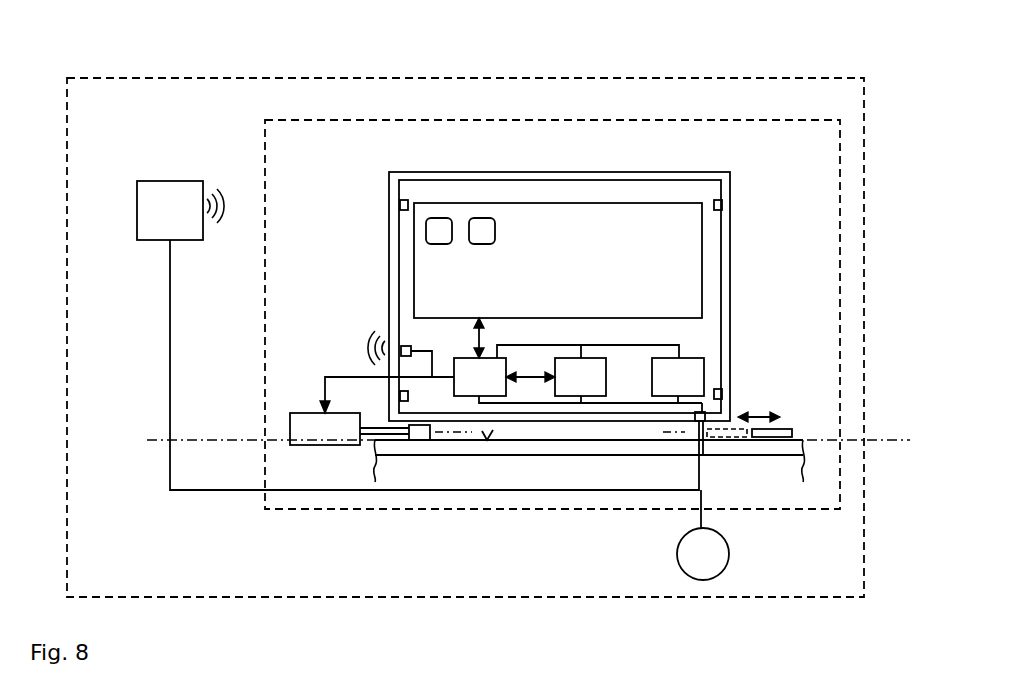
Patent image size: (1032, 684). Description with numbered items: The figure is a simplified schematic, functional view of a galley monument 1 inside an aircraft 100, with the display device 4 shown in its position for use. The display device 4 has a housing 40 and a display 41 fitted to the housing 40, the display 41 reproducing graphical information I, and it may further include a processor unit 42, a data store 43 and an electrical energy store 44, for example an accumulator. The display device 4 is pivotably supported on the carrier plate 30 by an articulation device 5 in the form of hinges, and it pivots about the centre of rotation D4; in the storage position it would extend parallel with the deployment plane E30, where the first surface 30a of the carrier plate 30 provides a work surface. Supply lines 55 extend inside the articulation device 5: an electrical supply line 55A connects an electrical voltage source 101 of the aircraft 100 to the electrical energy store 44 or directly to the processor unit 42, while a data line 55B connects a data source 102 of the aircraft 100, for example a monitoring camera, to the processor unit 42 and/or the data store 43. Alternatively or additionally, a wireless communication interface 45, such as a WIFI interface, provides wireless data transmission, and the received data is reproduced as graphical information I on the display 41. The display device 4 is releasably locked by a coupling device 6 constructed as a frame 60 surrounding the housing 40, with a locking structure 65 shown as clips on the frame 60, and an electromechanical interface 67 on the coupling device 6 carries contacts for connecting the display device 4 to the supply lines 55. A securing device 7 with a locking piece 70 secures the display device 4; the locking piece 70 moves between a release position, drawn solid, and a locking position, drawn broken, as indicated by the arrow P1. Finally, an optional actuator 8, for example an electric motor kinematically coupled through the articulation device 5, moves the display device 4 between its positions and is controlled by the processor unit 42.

The aircraft 100 is at (190, 78).
The galley monument 1 is at (458, 120).
The data source 102 is at (180, 210).
The deployment plane E30 is at (232, 440).
The coupling device 6 is at (559, 222).
The frame 60 is at (534, 172).
The display device 4 is at (587, 175).
The housing 40 is at (638, 190).
The display 41 is at (678, 220).
The graphical information I is at (440, 198).
The processor unit 42 is at (504, 357).
The data store 43 is at (580, 377).
The electrical energy store 44 is at (678, 377).
The wireless communication interface 45 is at (406, 346).
The locking structure 65 is at (400, 205).
The actuator 8 is at (372, 411).
The electromechanical interface 67 is at (704, 416).
The carrier plate 30 is at (535, 456).
The first surface 30a is at (488, 441).
The centre of rotation D4 is at (450, 441).
The articulation device 5 is at (420, 441).
The supply lines 55 is at (532, 530).
The data line 55B is at (350, 492).
The electrical supply line 55A is at (703, 498).
The securing device 7 is at (810, 410).
The arrow P1 is at (811, 378).
The locking piece 70 is at (810, 440).
The electrical voltage source 101 is at (679, 566).